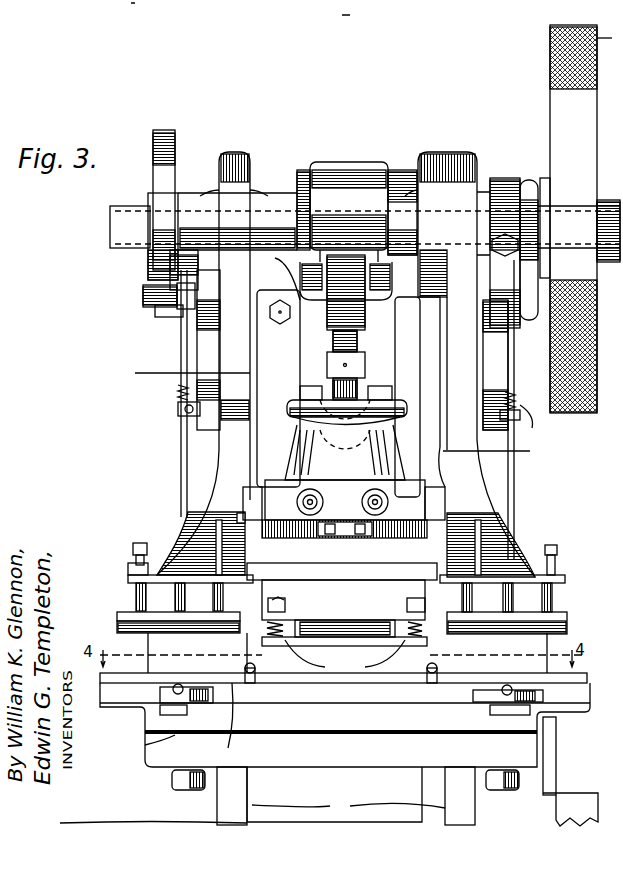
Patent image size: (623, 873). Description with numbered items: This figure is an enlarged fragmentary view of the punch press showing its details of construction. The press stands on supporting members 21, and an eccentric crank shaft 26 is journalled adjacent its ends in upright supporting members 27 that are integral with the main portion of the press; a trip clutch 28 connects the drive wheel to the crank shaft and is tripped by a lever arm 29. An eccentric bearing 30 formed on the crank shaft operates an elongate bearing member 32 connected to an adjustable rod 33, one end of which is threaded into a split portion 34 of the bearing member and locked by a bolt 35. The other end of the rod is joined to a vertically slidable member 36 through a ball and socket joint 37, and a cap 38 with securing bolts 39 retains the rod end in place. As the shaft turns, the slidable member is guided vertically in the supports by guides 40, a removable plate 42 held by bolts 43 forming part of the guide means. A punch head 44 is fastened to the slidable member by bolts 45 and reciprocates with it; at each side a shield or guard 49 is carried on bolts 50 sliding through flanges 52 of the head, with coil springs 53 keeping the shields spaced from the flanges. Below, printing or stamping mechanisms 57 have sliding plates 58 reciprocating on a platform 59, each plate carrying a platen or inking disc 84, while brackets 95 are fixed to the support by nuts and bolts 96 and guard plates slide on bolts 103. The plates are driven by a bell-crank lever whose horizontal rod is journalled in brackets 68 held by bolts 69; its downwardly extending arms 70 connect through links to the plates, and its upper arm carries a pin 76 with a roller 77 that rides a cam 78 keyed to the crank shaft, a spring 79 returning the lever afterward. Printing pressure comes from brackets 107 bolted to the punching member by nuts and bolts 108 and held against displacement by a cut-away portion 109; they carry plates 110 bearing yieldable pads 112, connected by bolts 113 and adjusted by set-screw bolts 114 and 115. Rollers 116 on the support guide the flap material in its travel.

The supporting members 21 is at (267, 796).
The eccentric crank shaft 26 is at (110, 227).
The upright supporting members 27 is at (236, 152).
The trip clutch 28 is at (498, 190).
The lever arm 29 is at (523, 320).
The eccentric bearing 30 is at (305, 170).
The elongate bearing member 32 is at (355, 164).
The adjustable rod 33 is at (365, 350).
The split portion 34 is at (365, 322).
The bolt 35 is at (378, 306).
The vertically slidable member 36 is at (345, 452).
The ball and socket joint 37 is at (400, 427).
The cap 38 is at (400, 402).
The securing bolts 39 is at (392, 392).
The guides 40 is at (496, 451).
The removable plate 42 is at (270, 280).
The bolts 43 is at (278, 324).
The punch head 44 is at (342, 578).
The bolts 45 is at (365, 508).
The shield or guard 49 is at (344, 648).
The bolts 50 is at (283, 601).
The flanges 52 is at (290, 605).
The coil springs 53 is at (400, 622).
The printing or stamping mechanisms 57 is at (361, 676).
The sliding plates 58 is at (160, 694).
The platform 59 is at (175, 735).
The brackets 68 is at (197, 357).
The bolts 69 is at (178, 414).
The downwardly extending arms 70 is at (514, 362).
The pin 76 is at (143, 297).
The roller 77 is at (155, 311).
The cam 78 is at (165, 132).
The spring 79 is at (135, 400).
The platen or inking disc 84 is at (229, 724).
The brackets 95 is at (583, 784).
The nuts and bolts 96 is at (583, 756).
The bolts 103 is at (581, 236).
The brackets 107 is at (128, 576).
The nuts and bolts 108 is at (240, 517).
The cut-away portion 109 is at (343, 505).
The plates 110 is at (117, 614).
The pads 112 is at (117, 626).
The bolts 113 is at (548, 535).
The bolts 114 is at (135, 584).
The bolts 115 is at (225, 582).
The rollers 116 is at (245, 669).